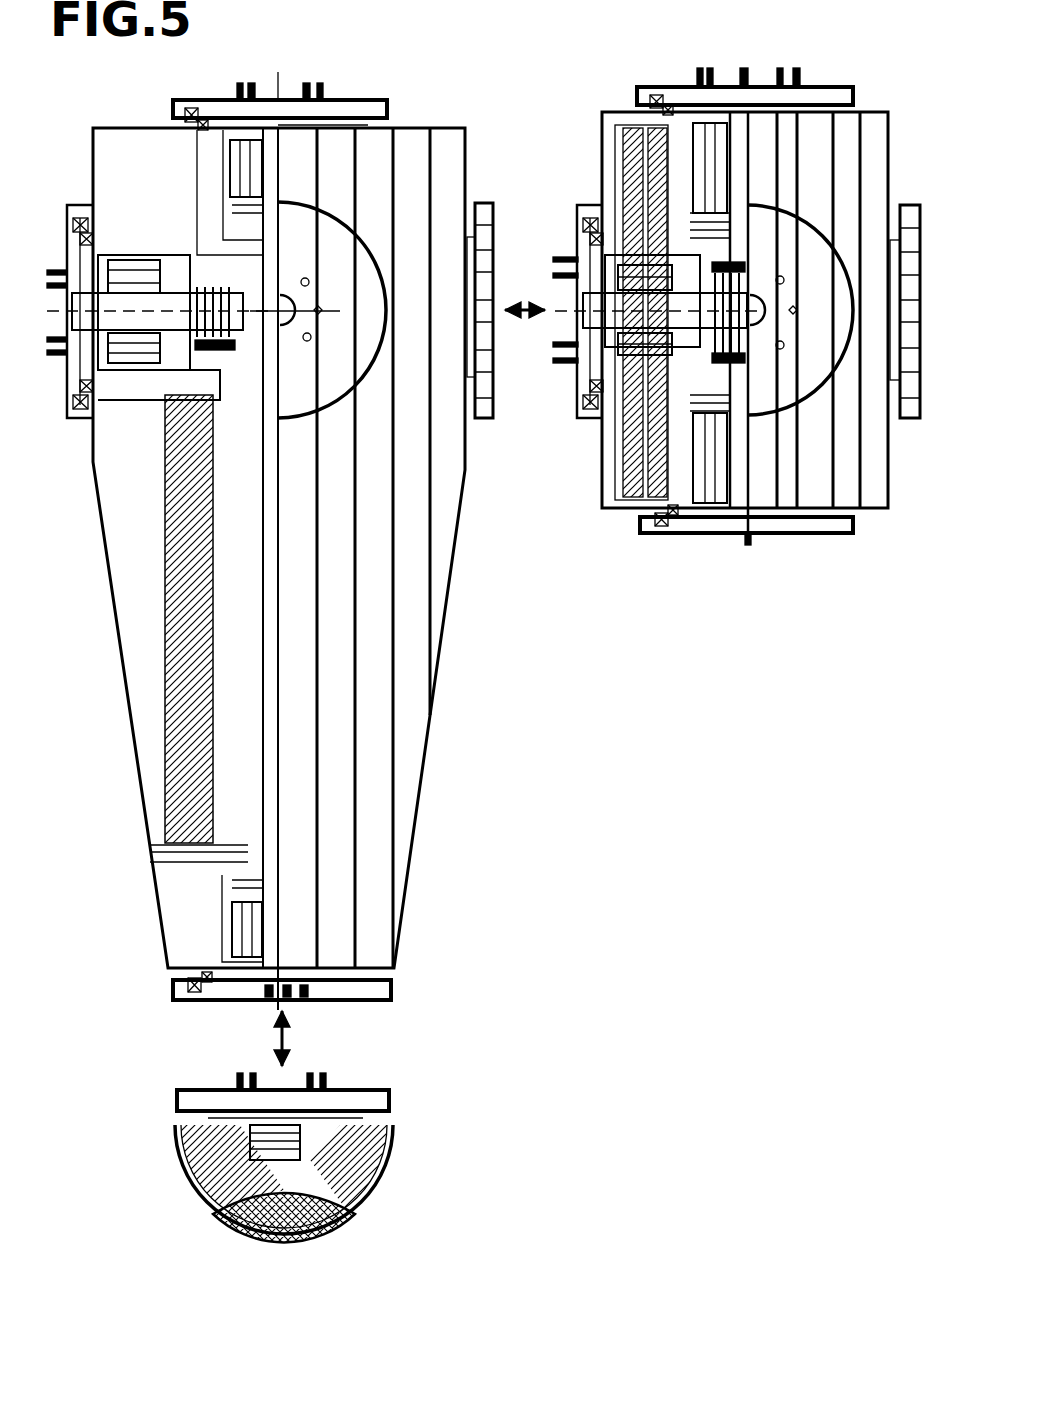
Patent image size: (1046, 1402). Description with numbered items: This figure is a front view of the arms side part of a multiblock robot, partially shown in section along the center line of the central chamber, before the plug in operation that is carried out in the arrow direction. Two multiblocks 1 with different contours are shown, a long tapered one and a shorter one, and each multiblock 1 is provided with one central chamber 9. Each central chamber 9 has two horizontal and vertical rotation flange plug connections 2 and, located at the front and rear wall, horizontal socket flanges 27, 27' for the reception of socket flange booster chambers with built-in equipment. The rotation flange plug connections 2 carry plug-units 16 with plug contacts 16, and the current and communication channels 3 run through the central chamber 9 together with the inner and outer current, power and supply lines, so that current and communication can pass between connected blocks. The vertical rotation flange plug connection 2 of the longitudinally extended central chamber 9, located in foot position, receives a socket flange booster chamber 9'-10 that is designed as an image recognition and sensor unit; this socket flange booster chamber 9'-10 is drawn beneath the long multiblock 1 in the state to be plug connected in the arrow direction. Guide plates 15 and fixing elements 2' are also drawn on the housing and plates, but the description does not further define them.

The multiblock 1 is at (643, 542).
The rotation flange plug connection 2 is at (488, 544).
The fixing elements / pins 2' is at (437, 589).
The current and communication channel 3 is at (733, 120).
The central chamber 9 is at (801, 285).
The socket flange booster chamber 9'-10 is at (231, 1206).
The guide plates 15 is at (235, 850).
The plug-unit 16 is at (283, 1075).
The horizontal socket flange 27 is at (417, 804).
The horizontal socket flange 27' is at (304, 353).